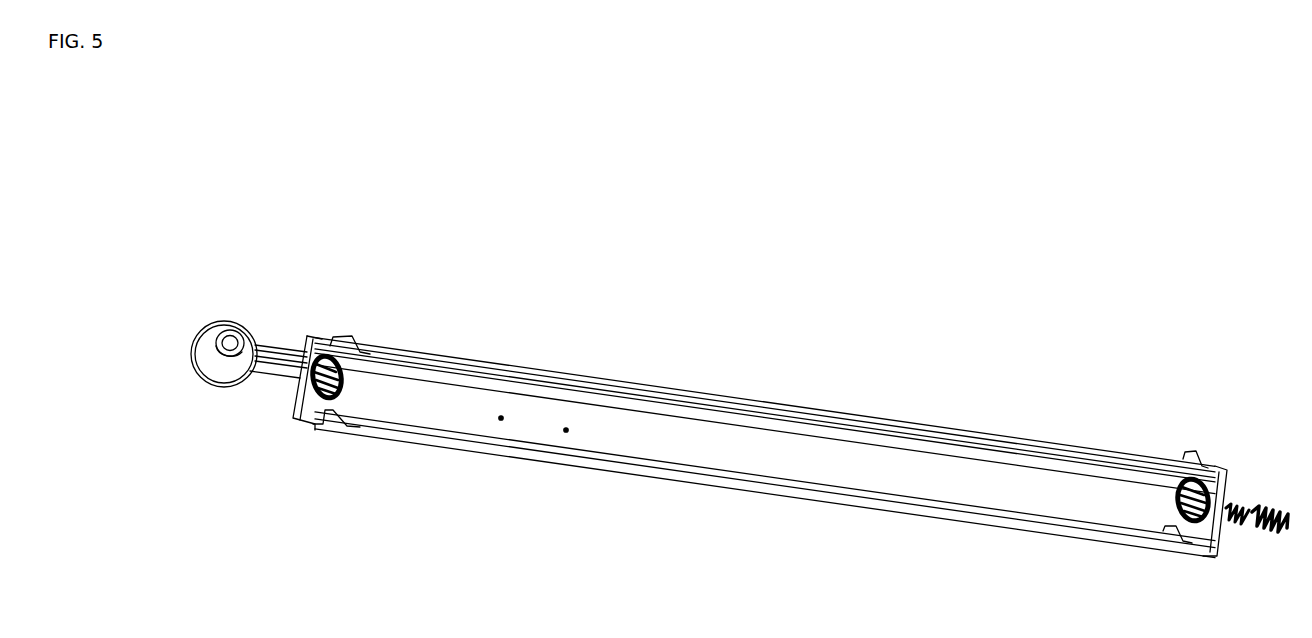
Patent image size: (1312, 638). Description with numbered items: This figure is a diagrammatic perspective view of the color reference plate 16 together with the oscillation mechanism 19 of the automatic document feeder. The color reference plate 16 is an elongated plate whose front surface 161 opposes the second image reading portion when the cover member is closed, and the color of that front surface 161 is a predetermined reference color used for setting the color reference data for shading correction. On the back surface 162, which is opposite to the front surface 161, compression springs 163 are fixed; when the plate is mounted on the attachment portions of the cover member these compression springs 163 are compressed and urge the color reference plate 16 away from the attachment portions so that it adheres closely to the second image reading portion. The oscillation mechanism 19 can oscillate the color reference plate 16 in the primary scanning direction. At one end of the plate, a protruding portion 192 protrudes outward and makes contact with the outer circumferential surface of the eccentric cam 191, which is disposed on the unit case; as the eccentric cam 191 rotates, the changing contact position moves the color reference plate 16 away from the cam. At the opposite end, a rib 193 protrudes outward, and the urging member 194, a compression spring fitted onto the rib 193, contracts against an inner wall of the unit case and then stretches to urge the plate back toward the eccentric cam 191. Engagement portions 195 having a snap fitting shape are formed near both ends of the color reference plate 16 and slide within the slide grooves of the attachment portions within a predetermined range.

The color reference plate 16 is at (405, 441).
The oscillation mechanism 19 is at (226, 276).
The front surface 161 is at (501, 420).
The back surface 162 is at (566, 432).
The compression springs 163 is at (355, 382).
The eccentric cam 191 is at (195, 380).
The protruding portion 192 is at (282, 346).
The rib 193 is at (1240, 505).
The urging member 194 is at (1265, 528).
The engagement portions 195 is at (342, 336).